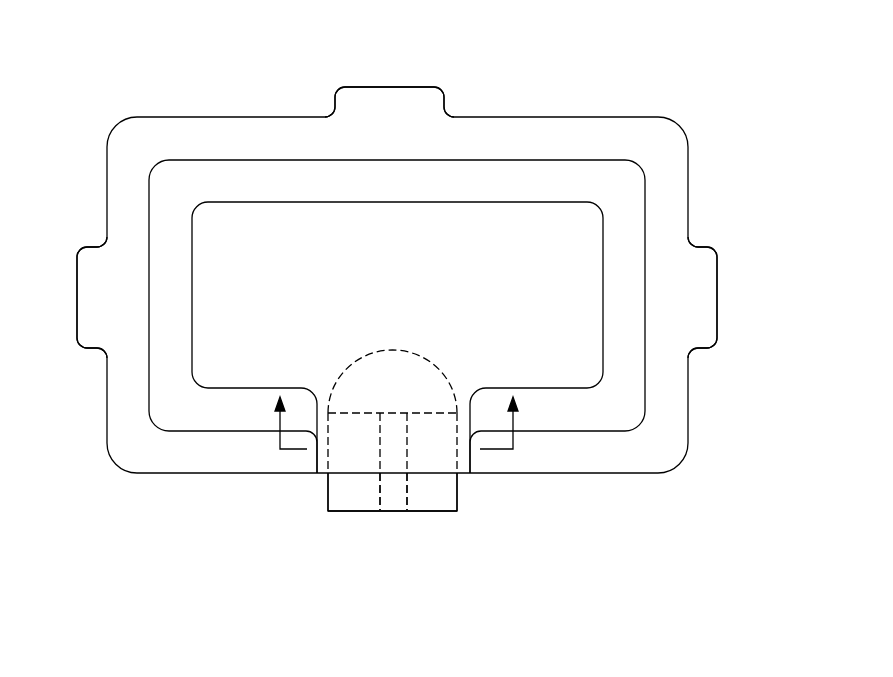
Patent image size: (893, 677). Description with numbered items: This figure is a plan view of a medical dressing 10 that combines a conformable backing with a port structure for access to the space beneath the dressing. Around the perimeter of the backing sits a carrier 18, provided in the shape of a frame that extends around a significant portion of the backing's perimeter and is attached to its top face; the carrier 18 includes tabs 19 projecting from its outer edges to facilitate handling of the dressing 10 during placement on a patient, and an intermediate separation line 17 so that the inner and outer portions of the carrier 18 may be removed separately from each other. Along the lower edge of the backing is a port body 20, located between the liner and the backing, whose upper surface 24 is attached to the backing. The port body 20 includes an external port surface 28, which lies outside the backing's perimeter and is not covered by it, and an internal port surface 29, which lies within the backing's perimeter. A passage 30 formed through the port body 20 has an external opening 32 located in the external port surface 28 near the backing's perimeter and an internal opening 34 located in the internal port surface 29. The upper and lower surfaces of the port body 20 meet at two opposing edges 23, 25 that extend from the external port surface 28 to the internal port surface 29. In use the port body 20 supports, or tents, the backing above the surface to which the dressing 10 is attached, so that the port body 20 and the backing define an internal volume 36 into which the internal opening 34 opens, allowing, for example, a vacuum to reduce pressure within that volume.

The medical dressing 10 is at (184, 79).
The intermediate separation line 17 is at (641, 163).
The carrier 18 is at (672, 162).
The tabs 19 is at (400, 85).
The port body 20 is at (388, 530).
The edge 23 is at (327, 495).
The upper surface 24 is at (430, 502).
The edge 25 is at (458, 491).
The external port surface 28 is at (339, 512).
The internal port surface 29 is at (432, 412).
The passage 30 is at (387, 497).
The external opening 32 is at (397, 510).
The internal opening 34 is at (398, 412).
The internal volume 36 is at (414, 362).